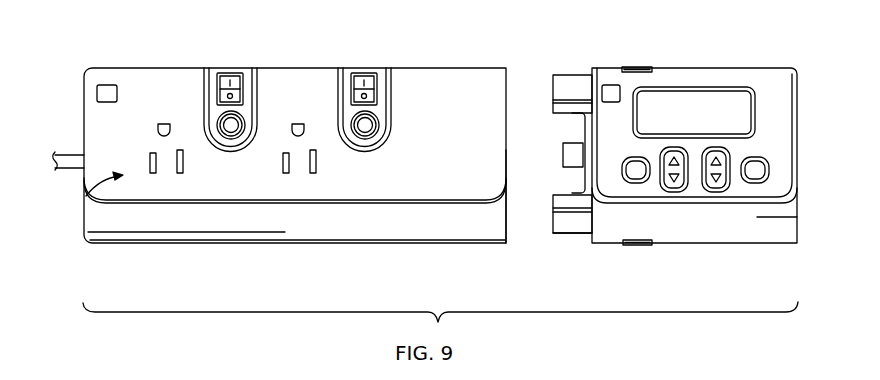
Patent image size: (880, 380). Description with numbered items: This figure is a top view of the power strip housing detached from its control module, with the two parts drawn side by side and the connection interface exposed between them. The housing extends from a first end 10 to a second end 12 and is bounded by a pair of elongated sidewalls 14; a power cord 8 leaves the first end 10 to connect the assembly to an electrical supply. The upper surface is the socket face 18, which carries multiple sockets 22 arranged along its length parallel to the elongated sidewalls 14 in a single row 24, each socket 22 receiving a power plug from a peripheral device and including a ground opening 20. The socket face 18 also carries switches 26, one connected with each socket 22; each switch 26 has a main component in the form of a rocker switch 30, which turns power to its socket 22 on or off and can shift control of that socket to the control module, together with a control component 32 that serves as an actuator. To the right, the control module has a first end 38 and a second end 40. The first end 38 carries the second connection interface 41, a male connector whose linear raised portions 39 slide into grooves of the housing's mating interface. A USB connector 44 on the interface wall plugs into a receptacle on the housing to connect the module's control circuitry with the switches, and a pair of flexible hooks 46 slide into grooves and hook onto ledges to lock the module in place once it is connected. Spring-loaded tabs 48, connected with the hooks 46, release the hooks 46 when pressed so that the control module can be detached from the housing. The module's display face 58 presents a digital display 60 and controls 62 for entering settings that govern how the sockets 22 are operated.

The power cord 8 is at (62, 155).
The first end 10 is at (130, 217).
The second end 12 is at (506, 228).
The elongated sidewalls 14 is at (494, 68).
The socket face 18 is at (465, 143).
The ground receptacle 20 is at (232, 172).
The sockets 22 is at (165, 175).
The row of sockets 24 is at (86, 193).
The switches 26 is at (257, 89).
The rocker switch 30 is at (223, 83).
The control component 32 is at (221, 122).
The first end 38 is at (552, 222).
The linear raised portions 39 is at (572, 212).
The second end 40 is at (798, 223).
The second connection interface 41 is at (565, 73).
The USB connector 44 is at (581, 156).
The flexible hooks 46 is at (571, 120).
The spring-loaded tabs 48 is at (630, 67).
The display face 58 is at (775, 98).
The digital display 60 is at (670, 107).
The controls 62 is at (633, 173).